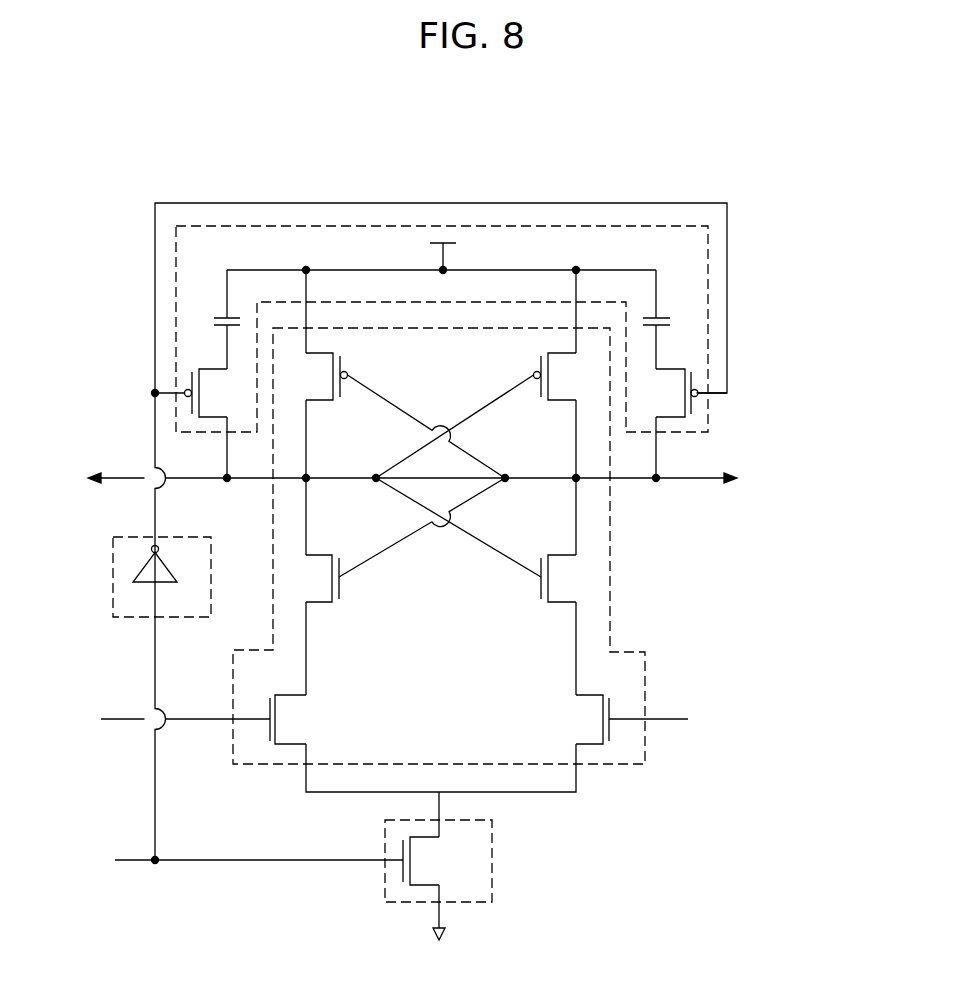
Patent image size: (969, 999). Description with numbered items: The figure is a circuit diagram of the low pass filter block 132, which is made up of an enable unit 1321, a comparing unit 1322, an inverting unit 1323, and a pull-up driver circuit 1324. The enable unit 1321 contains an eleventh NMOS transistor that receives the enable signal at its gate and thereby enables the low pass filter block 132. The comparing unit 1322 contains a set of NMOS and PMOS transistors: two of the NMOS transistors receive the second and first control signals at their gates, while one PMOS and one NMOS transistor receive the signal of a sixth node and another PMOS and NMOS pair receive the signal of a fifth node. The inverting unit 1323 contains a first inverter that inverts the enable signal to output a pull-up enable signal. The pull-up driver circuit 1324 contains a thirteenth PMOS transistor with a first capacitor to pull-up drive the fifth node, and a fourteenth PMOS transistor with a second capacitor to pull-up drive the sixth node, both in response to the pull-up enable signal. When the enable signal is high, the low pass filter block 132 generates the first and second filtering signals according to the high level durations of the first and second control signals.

The low pass filter block 132 is at (177, 132).
The enable unit 1321 is at (492, 832).
The comparing unit 1322 is at (645, 680).
The inverting unit 1323 is at (137, 617).
The pull-up driver circuit 1324 is at (176, 343).